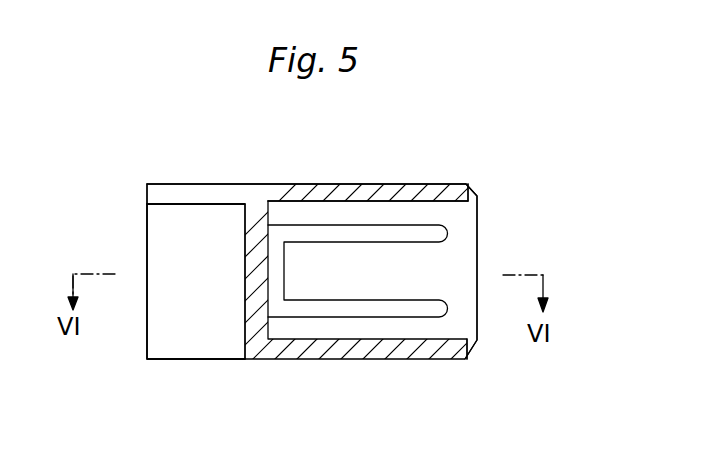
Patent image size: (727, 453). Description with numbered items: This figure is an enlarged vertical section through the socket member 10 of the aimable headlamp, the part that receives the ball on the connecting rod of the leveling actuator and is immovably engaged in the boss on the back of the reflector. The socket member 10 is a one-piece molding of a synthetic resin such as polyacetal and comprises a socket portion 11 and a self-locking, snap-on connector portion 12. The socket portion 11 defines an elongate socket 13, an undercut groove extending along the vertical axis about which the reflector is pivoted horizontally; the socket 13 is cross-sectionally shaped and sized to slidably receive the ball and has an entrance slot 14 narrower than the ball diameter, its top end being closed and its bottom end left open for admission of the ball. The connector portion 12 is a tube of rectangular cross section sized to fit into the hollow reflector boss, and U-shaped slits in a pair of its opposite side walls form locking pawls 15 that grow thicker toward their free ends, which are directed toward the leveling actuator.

The socket member 10 is at (335, 184).
The socket portion 11 is at (205, 183).
The self-locking, snap-on connector portion 12 is at (470, 184).
The elongate socket 13 is at (208, 340).
The entrance slot 14 is at (155, 339).
The locking pawls 15 is at (335, 280).